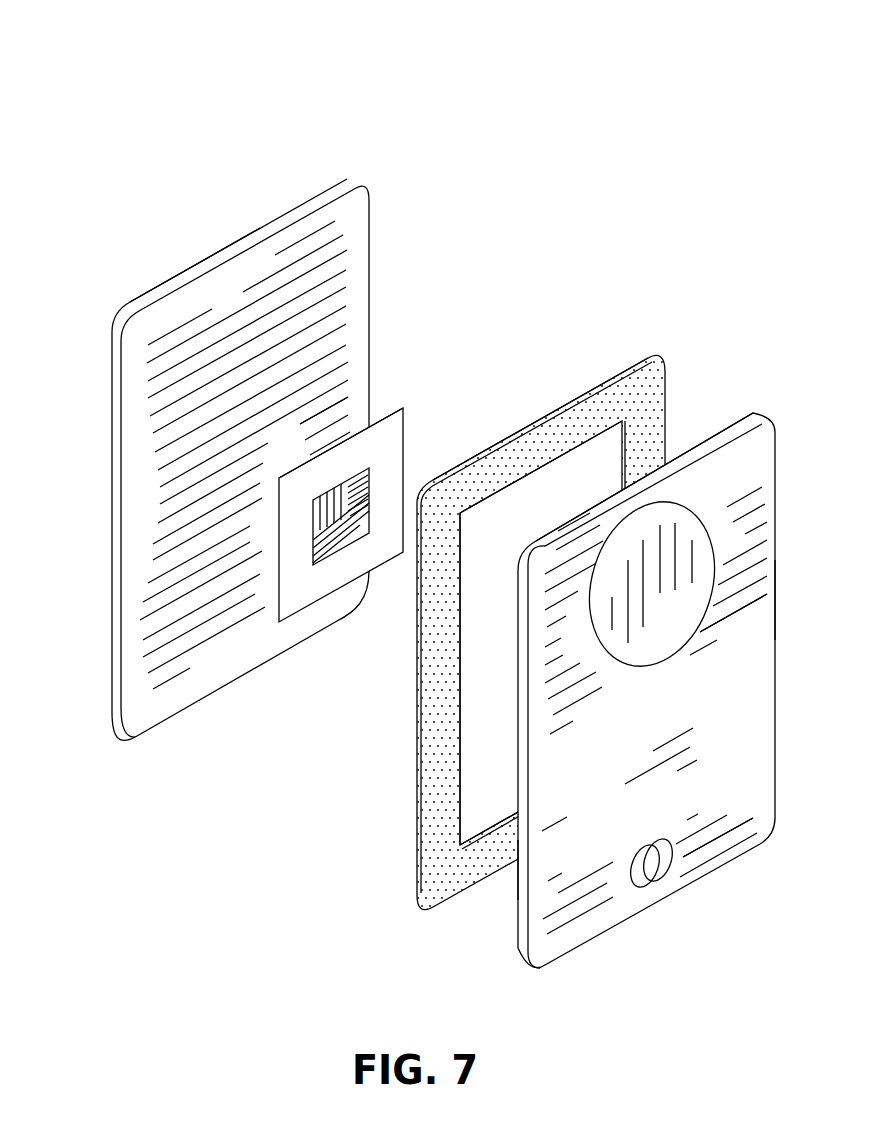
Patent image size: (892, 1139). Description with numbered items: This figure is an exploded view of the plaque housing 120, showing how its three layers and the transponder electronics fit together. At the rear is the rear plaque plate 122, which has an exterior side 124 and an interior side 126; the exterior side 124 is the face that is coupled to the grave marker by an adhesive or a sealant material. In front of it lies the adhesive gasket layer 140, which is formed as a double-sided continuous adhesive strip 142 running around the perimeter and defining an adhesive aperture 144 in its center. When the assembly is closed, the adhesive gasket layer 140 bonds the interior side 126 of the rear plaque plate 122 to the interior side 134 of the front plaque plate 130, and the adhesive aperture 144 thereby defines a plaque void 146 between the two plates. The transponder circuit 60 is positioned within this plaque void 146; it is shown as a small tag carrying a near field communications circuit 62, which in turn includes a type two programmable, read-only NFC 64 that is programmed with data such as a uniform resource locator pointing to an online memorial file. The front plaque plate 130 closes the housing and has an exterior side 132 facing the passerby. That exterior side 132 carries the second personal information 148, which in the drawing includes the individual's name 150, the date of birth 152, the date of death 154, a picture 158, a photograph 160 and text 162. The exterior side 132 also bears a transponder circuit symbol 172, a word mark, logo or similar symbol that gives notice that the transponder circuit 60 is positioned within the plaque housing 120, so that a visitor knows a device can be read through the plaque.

The plaque housing 120 is at (688, 76).
The rear plaque plate 122 is at (348, 181).
The exterior side of the rear plaque plate 124 is at (253, 229).
The interior side of the rear plaque plate 126 is at (355, 223).
The transponder circuit 60 is at (405, 446).
The near field communications circuit 62 is at (372, 445).
The type 2 programmable read only NFC 64 is at (333, 575).
The adhesive gasket layer 140 is at (658, 358).
The double-sided continuous adhesive strip 142 is at (600, 384).
The adhesive aperture 144 is at (458, 668).
The plaque void 146 is at (472, 745).
The front plaque plate 130 is at (777, 531).
The exterior side of the front plaque plate 132 is at (777, 597).
The interior side of the front plaque plate 134 is at (713, 438).
The photograph 160 is at (690, 523).
The picture 158 is at (703, 548).
The individual's name 150 is at (742, 657).
The second personal information 148 is at (725, 703).
The date of birth 152 is at (558, 790).
The date of death 154 is at (737, 770).
The transponder circuit symbol 172 is at (660, 888).
The text 162 is at (518, 867).